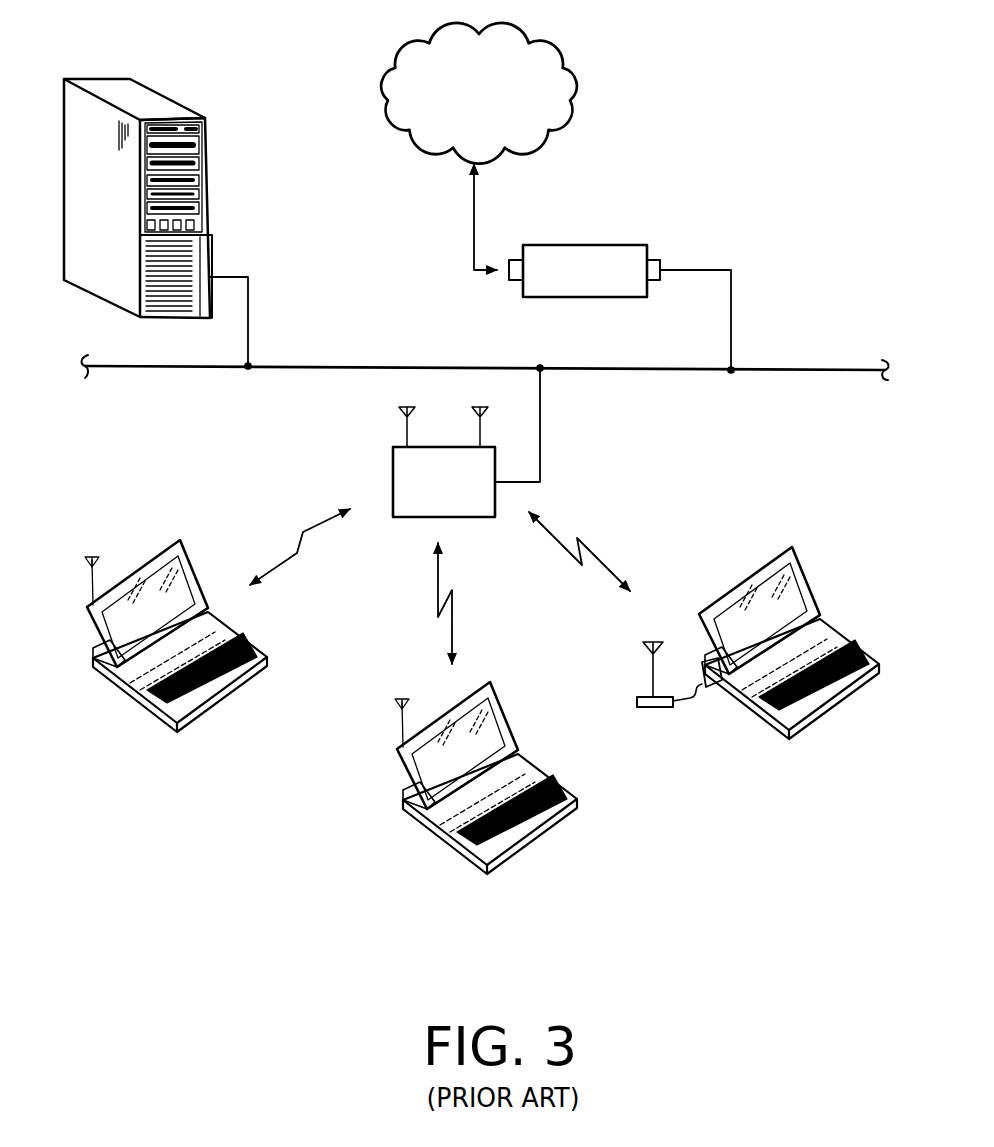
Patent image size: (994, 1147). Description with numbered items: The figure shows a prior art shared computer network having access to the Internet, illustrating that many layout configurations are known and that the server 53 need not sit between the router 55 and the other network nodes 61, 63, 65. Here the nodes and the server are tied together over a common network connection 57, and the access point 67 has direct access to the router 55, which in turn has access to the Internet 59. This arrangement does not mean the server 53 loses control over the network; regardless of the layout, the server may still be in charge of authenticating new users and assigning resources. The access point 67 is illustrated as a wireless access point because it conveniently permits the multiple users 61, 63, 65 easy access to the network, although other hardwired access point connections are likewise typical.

The server computer 53 is at (147, 83).
The router 55 is at (601, 245).
The network bus 57 is at (328, 366).
The Internet 59 is at (530, 43).
The network node 61 is at (220, 697).
The network node 63 is at (537, 837).
The network node 65 is at (845, 693).
The access point 67 is at (393, 463).